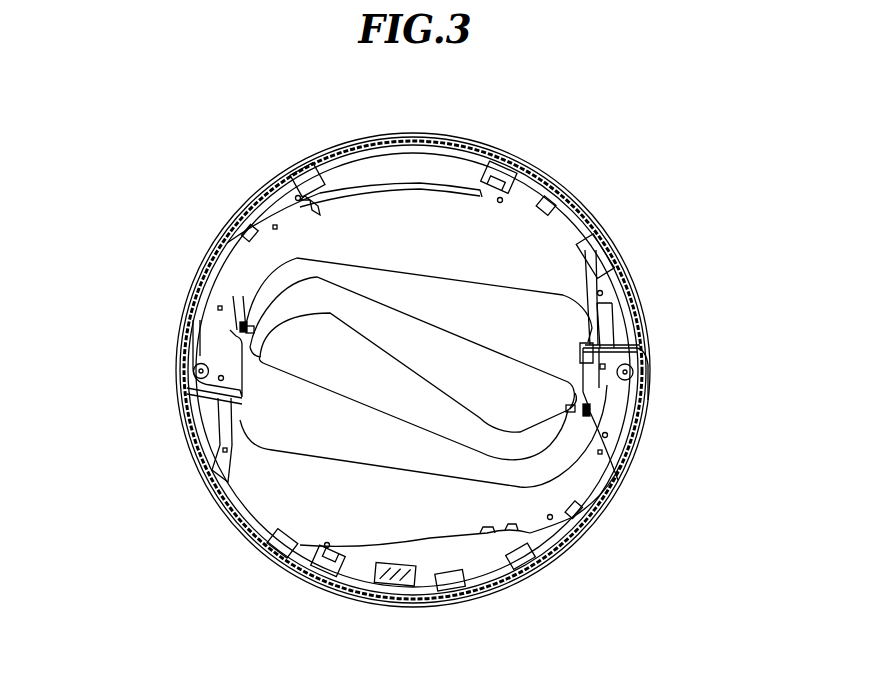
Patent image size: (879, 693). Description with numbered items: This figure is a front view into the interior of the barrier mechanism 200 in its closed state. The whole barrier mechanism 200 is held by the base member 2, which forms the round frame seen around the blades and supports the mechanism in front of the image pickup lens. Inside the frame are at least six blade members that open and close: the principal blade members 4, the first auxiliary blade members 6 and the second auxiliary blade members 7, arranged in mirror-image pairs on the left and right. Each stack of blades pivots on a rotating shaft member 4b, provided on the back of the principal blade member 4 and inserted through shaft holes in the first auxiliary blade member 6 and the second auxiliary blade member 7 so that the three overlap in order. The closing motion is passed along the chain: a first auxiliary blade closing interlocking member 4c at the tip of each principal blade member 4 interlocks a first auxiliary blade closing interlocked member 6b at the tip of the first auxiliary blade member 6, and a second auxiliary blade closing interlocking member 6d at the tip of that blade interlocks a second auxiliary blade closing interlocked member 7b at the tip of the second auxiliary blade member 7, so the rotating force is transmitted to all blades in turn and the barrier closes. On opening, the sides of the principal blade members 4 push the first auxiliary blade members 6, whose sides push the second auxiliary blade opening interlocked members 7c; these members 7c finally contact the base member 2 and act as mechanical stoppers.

The barrier mechanism 200 is at (587, 115).
The base member 2 is at (352, 142).
The second auxiliary blade member 7 is at (410, 228).
The second auxiliary blade opening interlocked member 7c is at (490, 162).
The second auxiliary blade closing interlocked member 7b is at (242, 402).
The first auxiliary blade member 6 is at (490, 307).
The first auxiliary blade closing interlocked member 6b is at (243, 325).
The second auxiliary blade closing interlocking member 6d is at (243, 393).
The principal blade member 4 is at (333, 370).
The rotating shaft member 4b is at (194, 370).
The first auxiliary blade closing interlocking member 4c is at (246, 330).